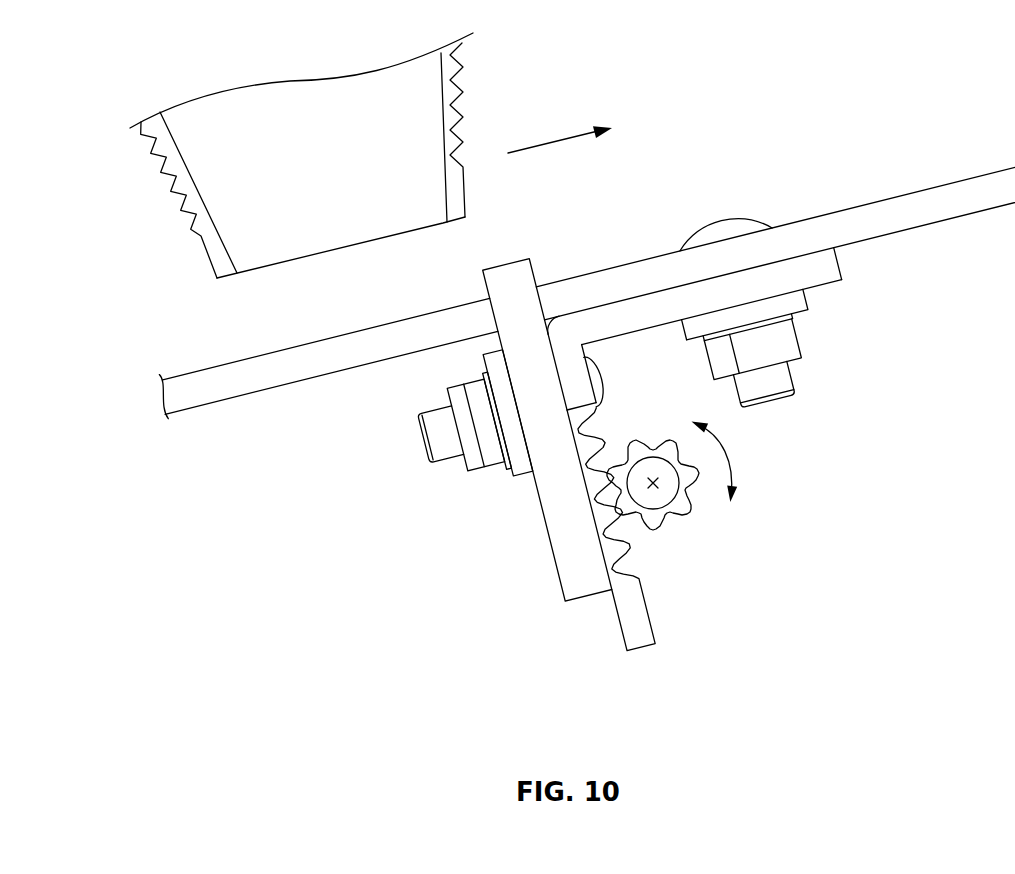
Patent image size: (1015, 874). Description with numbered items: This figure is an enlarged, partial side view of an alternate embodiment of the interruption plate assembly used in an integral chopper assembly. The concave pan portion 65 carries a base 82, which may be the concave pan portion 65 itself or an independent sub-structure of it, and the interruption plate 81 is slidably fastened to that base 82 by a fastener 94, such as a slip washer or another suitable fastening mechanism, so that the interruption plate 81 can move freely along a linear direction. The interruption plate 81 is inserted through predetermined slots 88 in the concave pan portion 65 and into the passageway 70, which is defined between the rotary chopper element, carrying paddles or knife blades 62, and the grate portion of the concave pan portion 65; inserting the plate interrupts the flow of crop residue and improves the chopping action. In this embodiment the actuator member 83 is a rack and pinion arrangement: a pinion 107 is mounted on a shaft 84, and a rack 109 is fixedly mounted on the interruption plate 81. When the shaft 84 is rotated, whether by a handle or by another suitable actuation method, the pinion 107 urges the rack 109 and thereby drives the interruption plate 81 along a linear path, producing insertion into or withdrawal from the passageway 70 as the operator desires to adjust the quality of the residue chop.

The paddles or knife blades 62 is at (432, 90).
The concave pan portion 65 is at (333, 348).
The passageway 70 is at (492, 243).
The interruption plate 81 is at (568, 520).
The base 82 is at (660, 307).
The actuator member 83 is at (682, 542).
The shaft 84 is at (653, 480).
The slots 88 is at (607, 287).
The fasteners 94 is at (418, 438).
The pinion 107 is at (675, 513).
The rack 109 is at (618, 547).